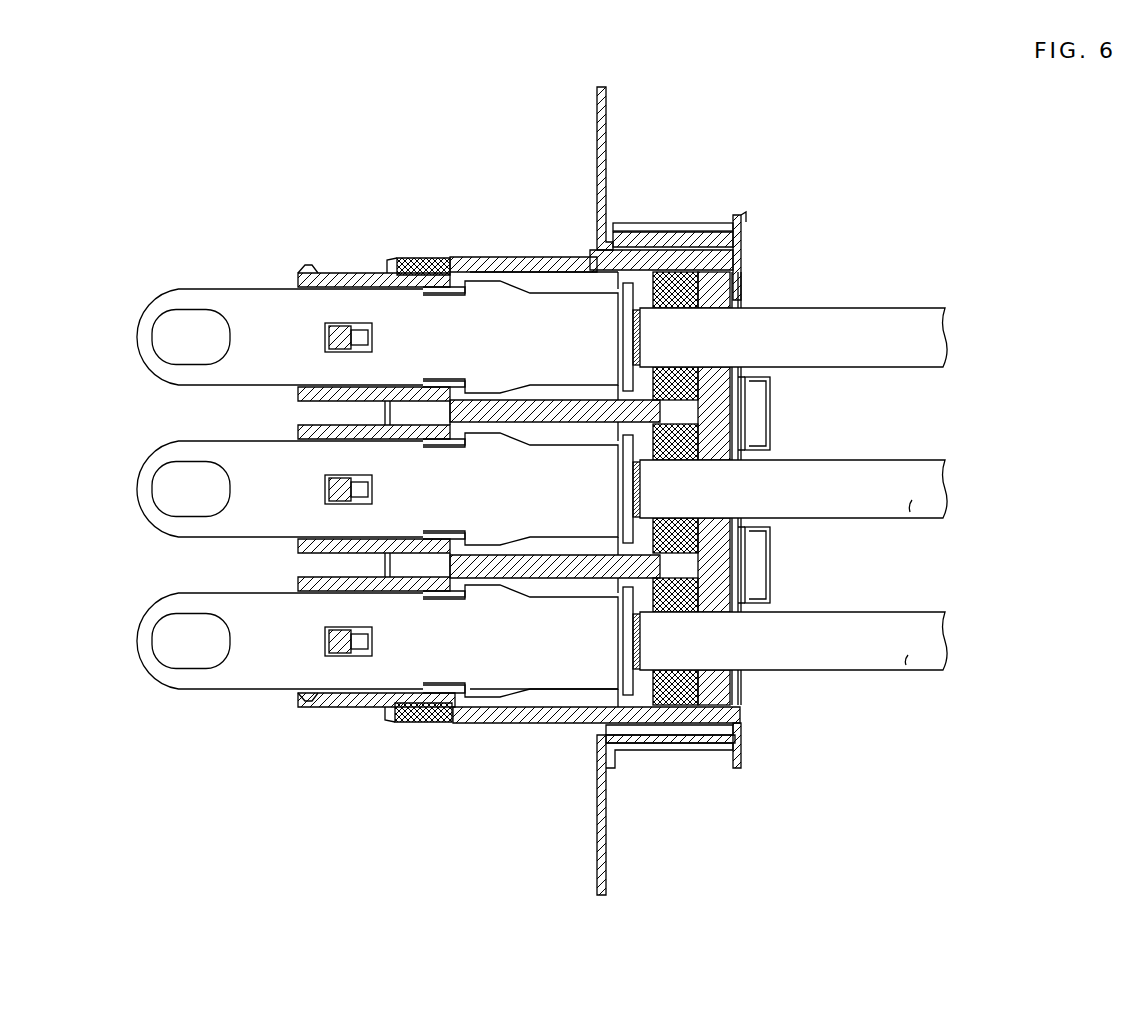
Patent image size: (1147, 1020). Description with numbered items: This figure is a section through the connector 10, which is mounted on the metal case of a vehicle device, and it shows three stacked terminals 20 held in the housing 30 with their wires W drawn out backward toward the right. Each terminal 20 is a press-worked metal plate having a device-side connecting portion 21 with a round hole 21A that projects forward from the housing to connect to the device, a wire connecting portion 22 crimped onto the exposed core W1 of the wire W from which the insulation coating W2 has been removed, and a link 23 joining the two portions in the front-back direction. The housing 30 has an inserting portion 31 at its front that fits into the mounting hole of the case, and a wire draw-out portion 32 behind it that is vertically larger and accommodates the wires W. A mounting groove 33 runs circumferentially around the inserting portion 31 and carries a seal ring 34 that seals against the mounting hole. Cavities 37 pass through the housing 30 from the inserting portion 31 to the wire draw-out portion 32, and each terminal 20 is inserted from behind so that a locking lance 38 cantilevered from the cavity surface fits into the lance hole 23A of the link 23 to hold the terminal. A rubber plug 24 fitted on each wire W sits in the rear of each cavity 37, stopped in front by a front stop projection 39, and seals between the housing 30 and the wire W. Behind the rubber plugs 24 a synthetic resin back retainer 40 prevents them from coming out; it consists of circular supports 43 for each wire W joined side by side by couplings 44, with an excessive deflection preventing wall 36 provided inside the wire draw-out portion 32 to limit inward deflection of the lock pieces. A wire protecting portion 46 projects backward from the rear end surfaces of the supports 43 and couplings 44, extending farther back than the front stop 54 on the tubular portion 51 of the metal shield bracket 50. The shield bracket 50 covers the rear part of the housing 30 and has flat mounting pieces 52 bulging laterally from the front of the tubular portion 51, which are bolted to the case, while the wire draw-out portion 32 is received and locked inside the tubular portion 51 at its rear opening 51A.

The connector 10 is at (745, 185).
The terminal 20 is at (157, 262).
The device-side connecting portion 21 is at (182, 527).
The round hole 21A is at (200, 318).
The wire connecting portion 22 is at (595, 478).
The link 23 is at (386, 330).
The lance hole 23A is at (322, 438).
The rubber plug 24 is at (678, 298).
The housing 30 is at (472, 740).
The inserting portion 31 is at (478, 258).
The wire draw-out portion 32 is at (712, 726).
The mounting groove 33 is at (436, 255).
The seal ring 34 is at (426, 725).
The excessive deflection preventing wall 36 is at (760, 414).
The cavity 37 is at (553, 256).
The locking lance 38 is at (330, 330).
The front stop projection 39 is at (740, 530).
The back retainer 40 is at (760, 288).
The support 43 is at (741, 303).
The coupling 44 is at (740, 393).
The wire protecting portion 46 is at (760, 398).
The shield bracket 50 is at (748, 728).
The tubular portion 51 is at (707, 238).
The rear opening 51A is at (745, 700).
The mounting piece 52 is at (607, 114).
The front stop 54 is at (741, 250).
The wire W is at (915, 290).
The core W1 is at (641, 300).
The insulation coating W2 is at (913, 508).